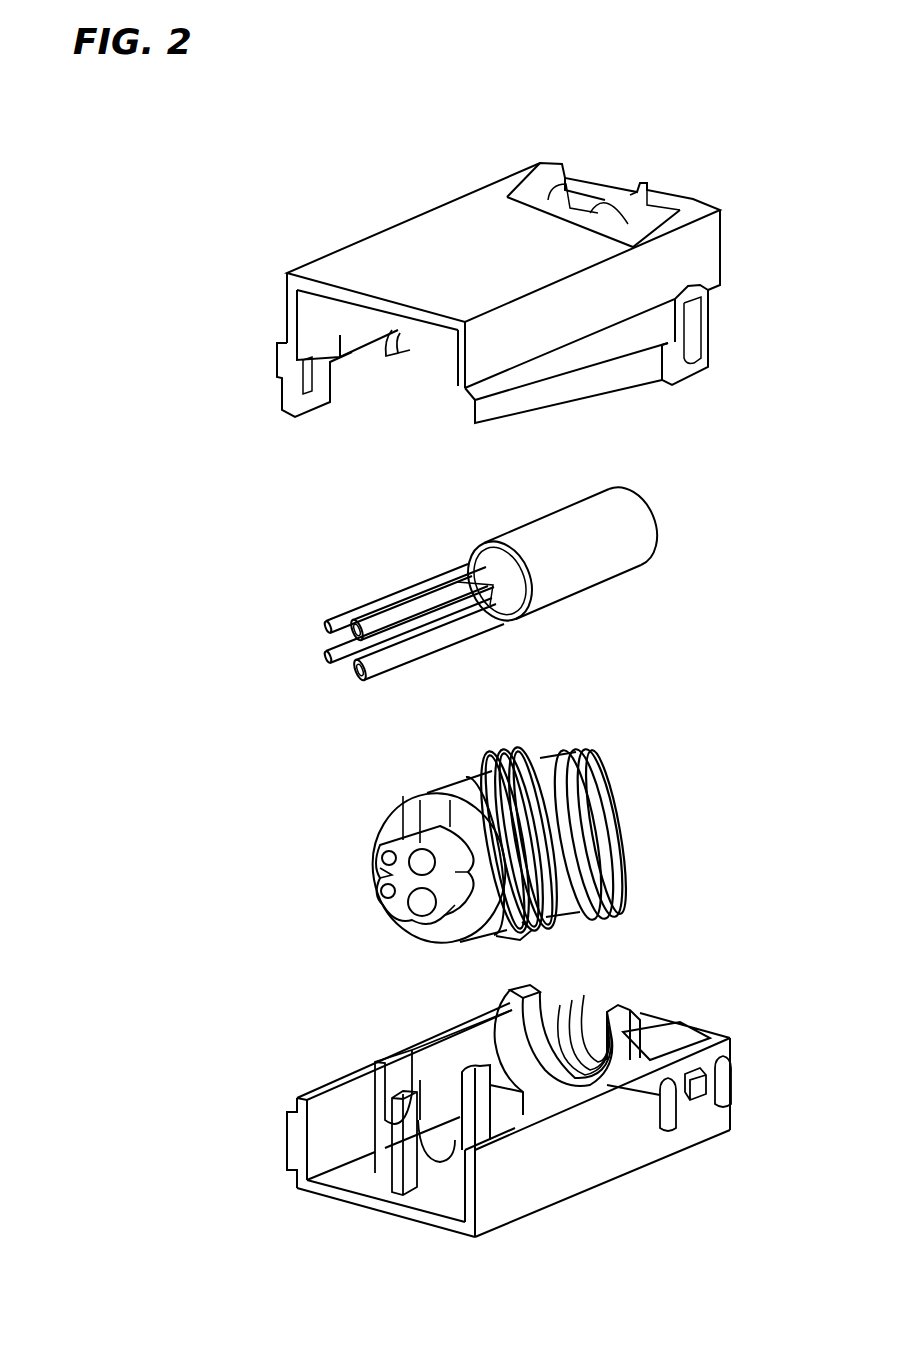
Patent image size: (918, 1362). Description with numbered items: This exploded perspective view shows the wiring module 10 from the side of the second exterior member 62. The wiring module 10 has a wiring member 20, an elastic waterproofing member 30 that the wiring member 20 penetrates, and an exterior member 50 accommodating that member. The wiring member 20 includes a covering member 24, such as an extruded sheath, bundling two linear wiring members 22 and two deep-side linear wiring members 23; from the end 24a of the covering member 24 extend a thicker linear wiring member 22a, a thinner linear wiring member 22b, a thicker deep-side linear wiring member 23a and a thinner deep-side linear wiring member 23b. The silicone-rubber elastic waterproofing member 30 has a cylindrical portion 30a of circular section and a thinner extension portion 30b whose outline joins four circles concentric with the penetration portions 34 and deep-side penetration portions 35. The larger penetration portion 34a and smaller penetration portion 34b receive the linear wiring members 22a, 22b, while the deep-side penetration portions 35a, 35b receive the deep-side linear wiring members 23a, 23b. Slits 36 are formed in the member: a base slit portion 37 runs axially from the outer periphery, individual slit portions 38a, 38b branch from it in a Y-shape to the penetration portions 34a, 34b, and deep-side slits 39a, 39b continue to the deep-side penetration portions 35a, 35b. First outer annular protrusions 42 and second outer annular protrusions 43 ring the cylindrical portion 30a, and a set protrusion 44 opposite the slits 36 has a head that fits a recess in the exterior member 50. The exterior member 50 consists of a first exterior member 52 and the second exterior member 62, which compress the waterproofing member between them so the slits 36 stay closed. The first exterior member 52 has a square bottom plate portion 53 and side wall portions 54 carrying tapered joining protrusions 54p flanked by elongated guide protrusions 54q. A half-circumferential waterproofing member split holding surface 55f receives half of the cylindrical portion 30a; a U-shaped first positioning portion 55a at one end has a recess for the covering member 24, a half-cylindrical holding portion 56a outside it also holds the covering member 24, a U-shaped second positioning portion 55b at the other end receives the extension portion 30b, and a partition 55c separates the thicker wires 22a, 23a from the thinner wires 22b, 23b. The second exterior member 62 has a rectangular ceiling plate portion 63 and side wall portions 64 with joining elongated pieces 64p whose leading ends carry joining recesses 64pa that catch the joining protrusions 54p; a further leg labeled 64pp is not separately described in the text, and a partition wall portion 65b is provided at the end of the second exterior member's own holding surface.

The wiring module 10 is at (430, 176).
The wiring member 20 is at (566, 497).
The linear wiring members 22 is at (407, 579).
The thicker linear wiring member 22a is at (412, 600).
The thinner linear wiring member 22b is at (337, 620).
The deep-side linear wiring members 23 is at (394, 649).
The thicker deep-side linear wiring member 23a is at (410, 665).
The thinner deep-side linear wiring member 23b is at (330, 664).
The covering member 24 is at (640, 522).
The end of the covering member 24a is at (532, 532).
The elastic waterproofing member 30 is at (625, 836).
The cylindrical portion 30a is at (612, 866).
The extension portion 30b is at (440, 920).
The penetration portions 34 is at (344, 820).
The penetration portion 34a is at (420, 848).
The penetration portion 34b is at (380, 856).
The deep-side penetration portions 35 is at (371, 944).
The deep-side penetration portion 35a is at (422, 908).
The deep-side penetration portion 35b is at (384, 893).
The slits 36 is at (604, 688).
The base slit portion 37 is at (505, 768).
The individual slit portion 38a is at (462, 790).
The individual slit portion 38b is at (430, 795).
The deep-side slit 39a is at (455, 915).
The deep-side slit 39b is at (382, 873).
The first outer annular protrusions 42 is at (596, 798).
The second outer annular protrusions 43 is at (540, 897).
The set protrusion 44 is at (510, 940).
The exterior member 50 is at (722, 200).
The first exterior member 52 is at (718, 1140).
The bottom plate portion 53 is at (440, 1222).
The side wall portions 54 is at (292, 1174).
The joining protrusions 54p is at (720, 1075).
The guide protrusions 54q is at (690, 1100).
The first positioning portion 55a is at (640, 1025).
The second positioning portion 55b is at (375, 1068).
The partition 55c is at (378, 1175).
The waterproofing member split holding surface 55f is at (450, 1060).
The half-cylindrical holding portion 56a is at (600, 1008).
The second exterior member 62 is at (722, 282).
The ceiling plate portion 63 is at (375, 250).
The side wall portions 64 is at (282, 308).
The joining elongated pieces 64p is at (333, 398).
The joining recesses 64pa is at (698, 350).
The engaging leg 64pp is at (676, 376).
The partition wall portion 65b is at (388, 352).